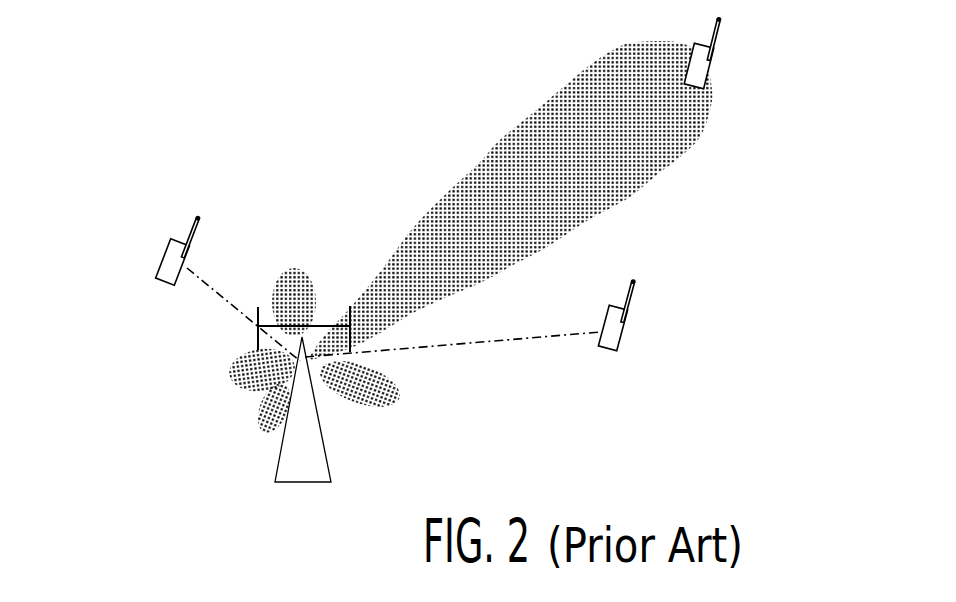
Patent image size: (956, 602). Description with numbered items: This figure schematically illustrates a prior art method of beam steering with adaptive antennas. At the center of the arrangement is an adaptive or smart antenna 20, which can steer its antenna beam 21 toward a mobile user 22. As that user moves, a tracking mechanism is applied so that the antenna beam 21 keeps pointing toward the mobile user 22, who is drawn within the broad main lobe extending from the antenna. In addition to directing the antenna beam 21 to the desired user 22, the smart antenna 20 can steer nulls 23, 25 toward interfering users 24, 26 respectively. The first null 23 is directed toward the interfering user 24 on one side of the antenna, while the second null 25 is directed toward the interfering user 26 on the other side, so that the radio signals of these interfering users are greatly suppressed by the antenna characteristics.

The adaptive or smart antenna 20 is at (303, 461).
The antenna beam 21 is at (635, 157).
The mobile user 22 is at (698, 68).
The null 23 is at (216, 293).
The interfering user 24 is at (175, 255).
The null 25 is at (565, 335).
The interfering user 26 is at (610, 333).